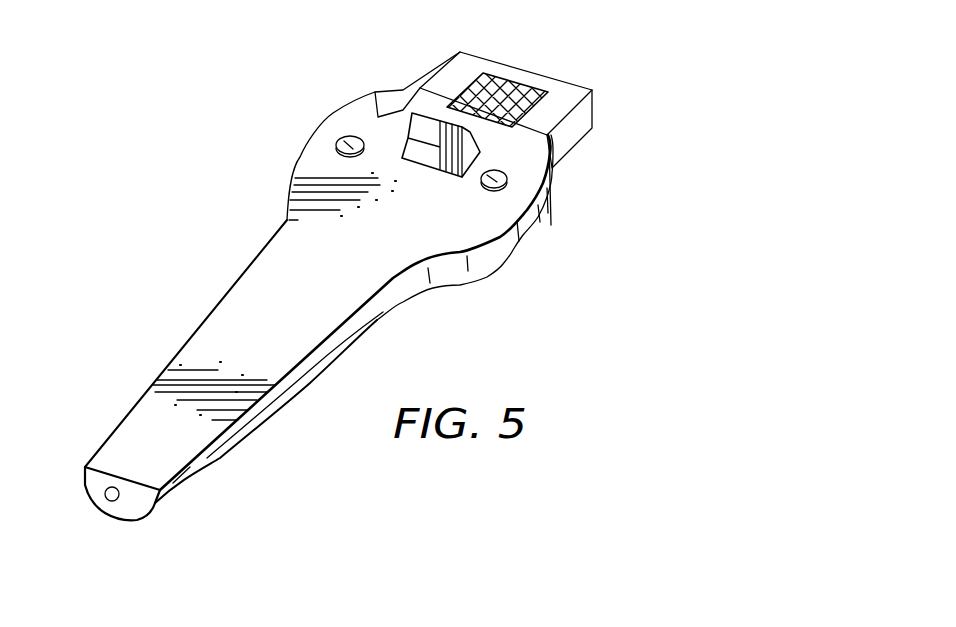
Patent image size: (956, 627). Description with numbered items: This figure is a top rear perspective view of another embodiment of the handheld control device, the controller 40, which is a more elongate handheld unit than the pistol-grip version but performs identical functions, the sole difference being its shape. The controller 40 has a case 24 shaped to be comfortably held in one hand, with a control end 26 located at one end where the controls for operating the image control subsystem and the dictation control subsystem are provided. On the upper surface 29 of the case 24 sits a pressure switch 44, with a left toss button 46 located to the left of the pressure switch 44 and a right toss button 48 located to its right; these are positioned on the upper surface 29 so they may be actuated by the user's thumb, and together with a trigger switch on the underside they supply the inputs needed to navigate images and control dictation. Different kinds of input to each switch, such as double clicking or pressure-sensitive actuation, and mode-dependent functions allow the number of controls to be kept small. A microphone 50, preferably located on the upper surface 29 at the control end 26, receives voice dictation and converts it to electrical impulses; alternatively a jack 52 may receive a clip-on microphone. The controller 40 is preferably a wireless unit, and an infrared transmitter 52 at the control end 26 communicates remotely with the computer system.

The case 24 is at (243, 437).
The control end 26 is at (441, 78).
The upper surface 29 is at (223, 337).
The controller 40 is at (562, 216).
The pressure switch 44 is at (408, 113).
The left toss button 46 is at (346, 146).
The right toss button 48 is at (497, 172).
The microphone 50 is at (502, 78).
The infrared transmitter 52 is at (560, 82).